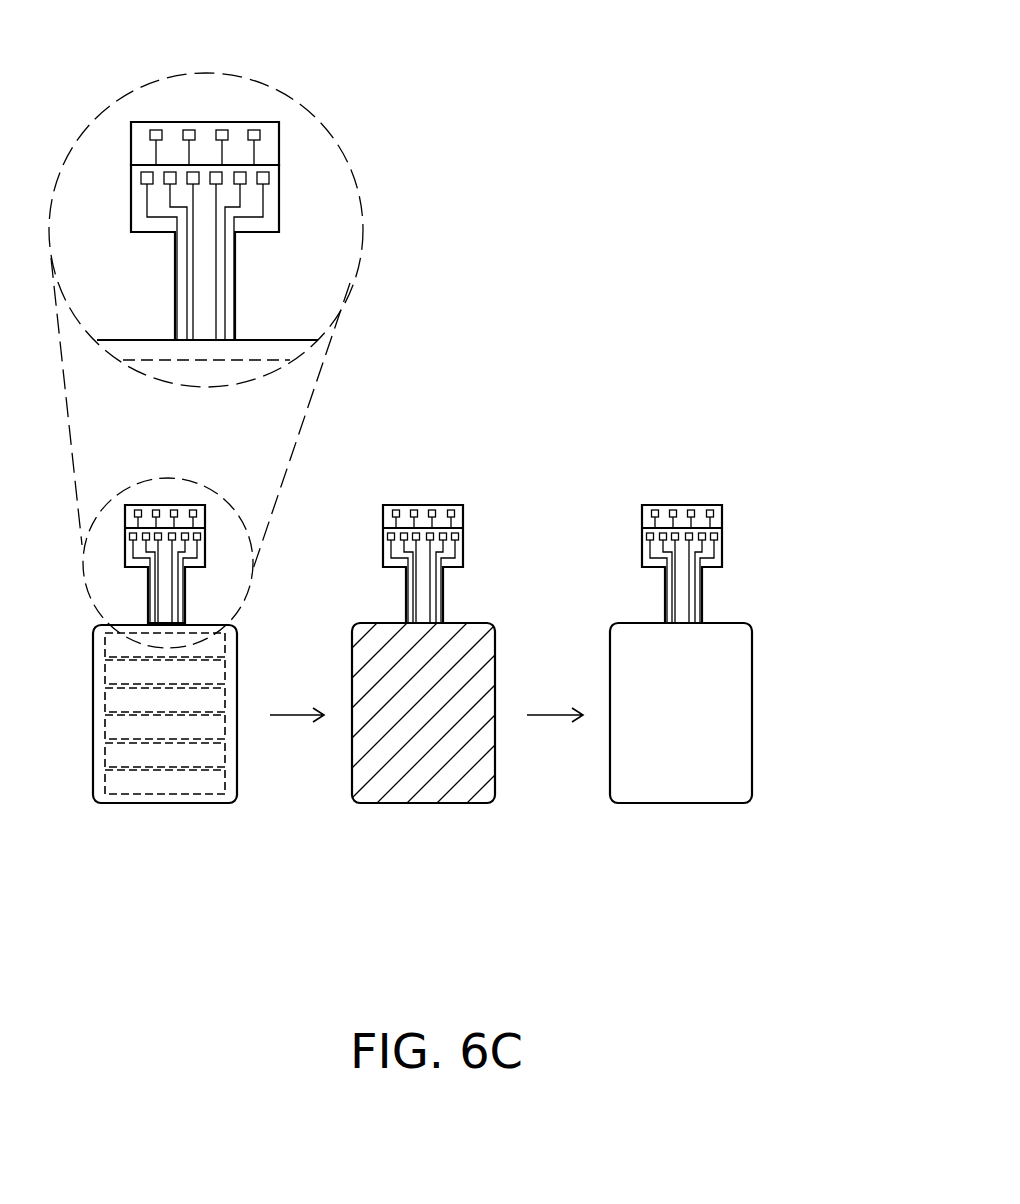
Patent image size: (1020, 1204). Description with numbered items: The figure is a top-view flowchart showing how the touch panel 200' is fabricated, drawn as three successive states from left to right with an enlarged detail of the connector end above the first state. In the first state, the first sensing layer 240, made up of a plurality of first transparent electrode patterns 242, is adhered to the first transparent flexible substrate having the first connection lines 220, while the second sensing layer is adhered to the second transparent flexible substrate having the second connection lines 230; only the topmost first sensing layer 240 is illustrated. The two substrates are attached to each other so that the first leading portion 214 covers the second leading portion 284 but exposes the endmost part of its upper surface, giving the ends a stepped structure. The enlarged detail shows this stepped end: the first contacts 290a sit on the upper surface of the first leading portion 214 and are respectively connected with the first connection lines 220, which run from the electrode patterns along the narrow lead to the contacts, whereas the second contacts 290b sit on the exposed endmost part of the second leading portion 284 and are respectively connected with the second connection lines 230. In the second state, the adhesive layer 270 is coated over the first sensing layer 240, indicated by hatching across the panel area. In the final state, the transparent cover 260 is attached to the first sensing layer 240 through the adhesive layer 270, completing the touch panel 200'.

The first leading portion 214 is at (423, 389).
The first connection lines 220 is at (230, 303).
The second connection lines 230 is at (253, 148).
The second leading portion 284 is at (272, 87).
The first contacts 290a is at (265, 180).
The second contacts 290b is at (254, 134).
The first sensing layer 240 is at (142, 800).
The first transparent electrode patterns 242 is at (210, 783).
The adhesive layer 270 is at (412, 792).
The transparent cover 260 is at (668, 792).
The touch panel 200' is at (700, 717).